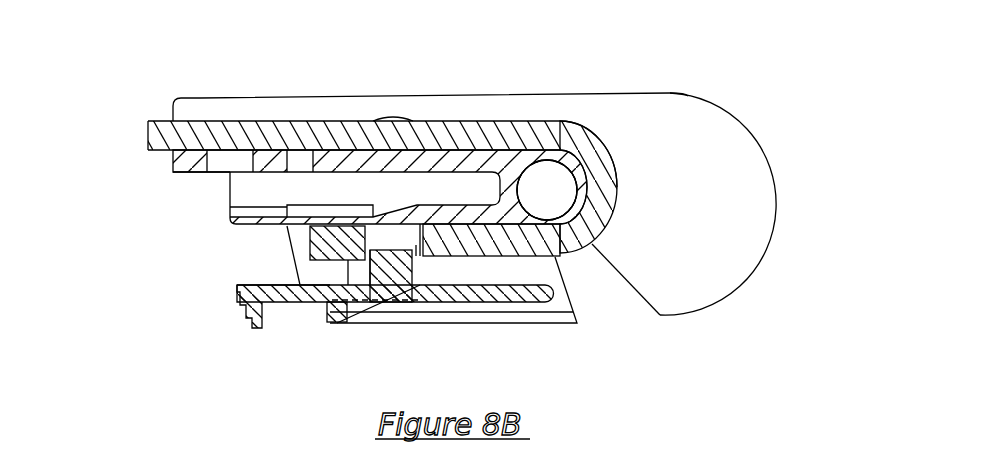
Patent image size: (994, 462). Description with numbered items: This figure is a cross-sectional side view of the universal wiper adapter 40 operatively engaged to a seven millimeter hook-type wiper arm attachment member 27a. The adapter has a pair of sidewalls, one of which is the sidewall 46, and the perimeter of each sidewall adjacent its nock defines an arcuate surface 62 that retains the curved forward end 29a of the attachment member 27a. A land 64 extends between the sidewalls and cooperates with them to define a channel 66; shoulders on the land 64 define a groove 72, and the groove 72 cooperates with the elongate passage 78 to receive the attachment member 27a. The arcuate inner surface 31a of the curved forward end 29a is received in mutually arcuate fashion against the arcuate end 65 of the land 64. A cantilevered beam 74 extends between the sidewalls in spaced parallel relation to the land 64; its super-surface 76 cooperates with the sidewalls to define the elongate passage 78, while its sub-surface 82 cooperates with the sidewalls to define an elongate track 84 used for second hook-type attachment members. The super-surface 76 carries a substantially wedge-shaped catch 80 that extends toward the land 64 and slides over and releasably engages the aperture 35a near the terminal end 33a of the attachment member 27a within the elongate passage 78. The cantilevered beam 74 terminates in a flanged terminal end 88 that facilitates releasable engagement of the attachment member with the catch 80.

The channel 66 is at (156, 105).
The sidewall 46 is at (324, 97).
The arcuate end 65 is at (599, 146).
The hook-type wiper arm attachment member 27a is at (148, 136).
The groove 72 is at (155, 160).
The land 64 is at (181, 163).
The arcuate surface 62 is at (767, 170).
The curved forward end 29a is at (610, 193).
The arcuate inner surface 31a is at (588, 247).
The terminal end 33a is at (322, 240).
The elongate passage 78 is at (238, 262).
The super-surface 76 is at (262, 285).
The flanged terminal end 88 is at (240, 312).
The cantilevered beam 74 is at (266, 303).
The sub-surface 82 is at (306, 303).
The catch 80 is at (387, 273).
The aperture 35a is at (419, 248).
The elongate track 84 is at (586, 306).
The universal wiper adapter 40 is at (688, 331).